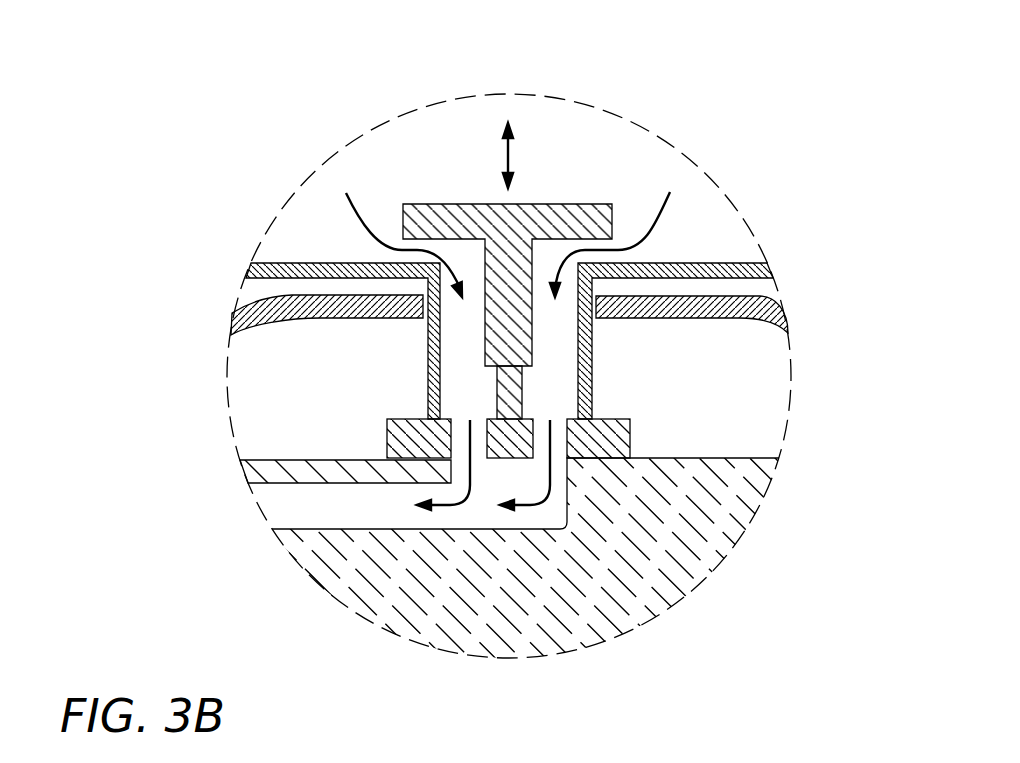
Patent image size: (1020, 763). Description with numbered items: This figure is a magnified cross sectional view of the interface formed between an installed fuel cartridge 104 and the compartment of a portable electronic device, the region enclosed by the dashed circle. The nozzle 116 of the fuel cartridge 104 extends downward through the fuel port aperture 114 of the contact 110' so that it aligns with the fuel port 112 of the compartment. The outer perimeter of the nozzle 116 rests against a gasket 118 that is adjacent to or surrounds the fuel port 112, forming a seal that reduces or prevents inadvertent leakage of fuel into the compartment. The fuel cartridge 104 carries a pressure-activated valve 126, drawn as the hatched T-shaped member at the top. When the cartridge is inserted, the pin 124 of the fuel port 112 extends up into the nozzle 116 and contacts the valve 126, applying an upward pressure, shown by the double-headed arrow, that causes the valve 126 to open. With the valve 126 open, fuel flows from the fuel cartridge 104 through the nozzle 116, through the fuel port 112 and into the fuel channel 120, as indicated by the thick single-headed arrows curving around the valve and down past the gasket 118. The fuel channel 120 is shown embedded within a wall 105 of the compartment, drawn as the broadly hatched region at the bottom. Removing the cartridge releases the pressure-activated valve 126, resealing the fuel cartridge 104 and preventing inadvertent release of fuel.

The pressure-activated valve 126 is at (567, 213).
The fuel cartridge 104 is at (740, 262).
The contact 110' is at (563, 343).
The fuel port aperture 114 is at (410, 335).
The gasket 118 is at (407, 420).
The nozzle 116 is at (592, 373).
The fuel port 112 is at (485, 480).
The pin 124 is at (522, 408).
The fuel channel 120 is at (260, 505).
The wall 105 is at (323, 575).